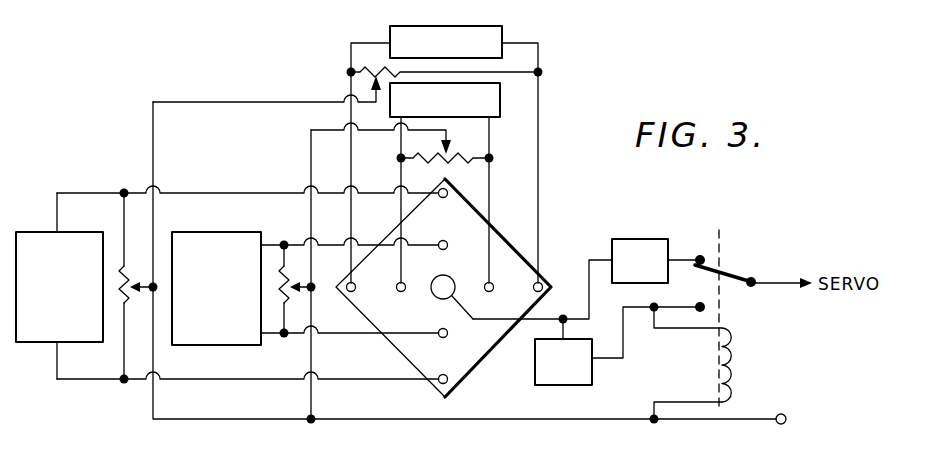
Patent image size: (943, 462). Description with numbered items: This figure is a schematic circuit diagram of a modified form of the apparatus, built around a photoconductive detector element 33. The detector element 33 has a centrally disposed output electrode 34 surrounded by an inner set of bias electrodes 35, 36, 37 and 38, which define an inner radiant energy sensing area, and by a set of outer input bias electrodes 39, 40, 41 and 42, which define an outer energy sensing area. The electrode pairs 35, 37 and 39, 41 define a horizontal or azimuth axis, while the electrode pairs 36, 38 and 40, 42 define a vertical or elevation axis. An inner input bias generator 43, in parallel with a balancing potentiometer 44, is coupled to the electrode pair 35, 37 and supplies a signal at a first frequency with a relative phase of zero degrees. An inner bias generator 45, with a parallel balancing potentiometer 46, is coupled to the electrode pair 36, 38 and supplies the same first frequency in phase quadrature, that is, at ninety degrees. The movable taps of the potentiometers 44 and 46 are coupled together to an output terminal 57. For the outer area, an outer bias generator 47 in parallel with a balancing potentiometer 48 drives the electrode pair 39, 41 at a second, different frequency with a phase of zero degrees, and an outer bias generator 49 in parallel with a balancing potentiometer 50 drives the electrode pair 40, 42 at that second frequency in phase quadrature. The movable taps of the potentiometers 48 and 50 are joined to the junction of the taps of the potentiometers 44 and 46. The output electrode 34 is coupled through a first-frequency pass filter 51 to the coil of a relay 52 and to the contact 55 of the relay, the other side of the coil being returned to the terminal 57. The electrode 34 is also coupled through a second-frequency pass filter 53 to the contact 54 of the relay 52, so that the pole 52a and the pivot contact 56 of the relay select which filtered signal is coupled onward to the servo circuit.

The photoconductive detector element 33 is at (405, 347).
The output electrode 34 is at (434, 295).
The inner bias electrode 35 is at (492, 291).
The inner bias electrode 36 is at (447, 336).
The inner bias electrode 37 is at (404, 283).
The inner bias electrode 38 is at (447, 247).
The outer input bias electrode 39 is at (541, 283).
The outer input bias electrode 40 is at (447, 382).
The outer input bias electrode 41 is at (355, 284).
The outer input bias electrode 42 is at (443, 198).
The inner input bias generator 43 is at (495, 107).
The balancing potentiometer 44 is at (462, 163).
The inner bias generator 45 is at (233, 238).
The balancing potentiometer 46 is at (280, 303).
The outer bias generator 47 is at (502, 33).
The balancing potentiometer 48 is at (372, 67).
The outer bias generator 49 is at (78, 238).
The balancing potentiometer 50 is at (121, 303).
The f1 pass filter 51 is at (590, 383).
The relay 52 is at (728, 362).
The pole 52a is at (732, 272).
The f2 pass filter 53 is at (654, 243).
The contact 54 is at (700, 256).
The contact 55 is at (705, 310).
The pivot contact 56 is at (753, 286).
The output terminal 57 is at (787, 415).